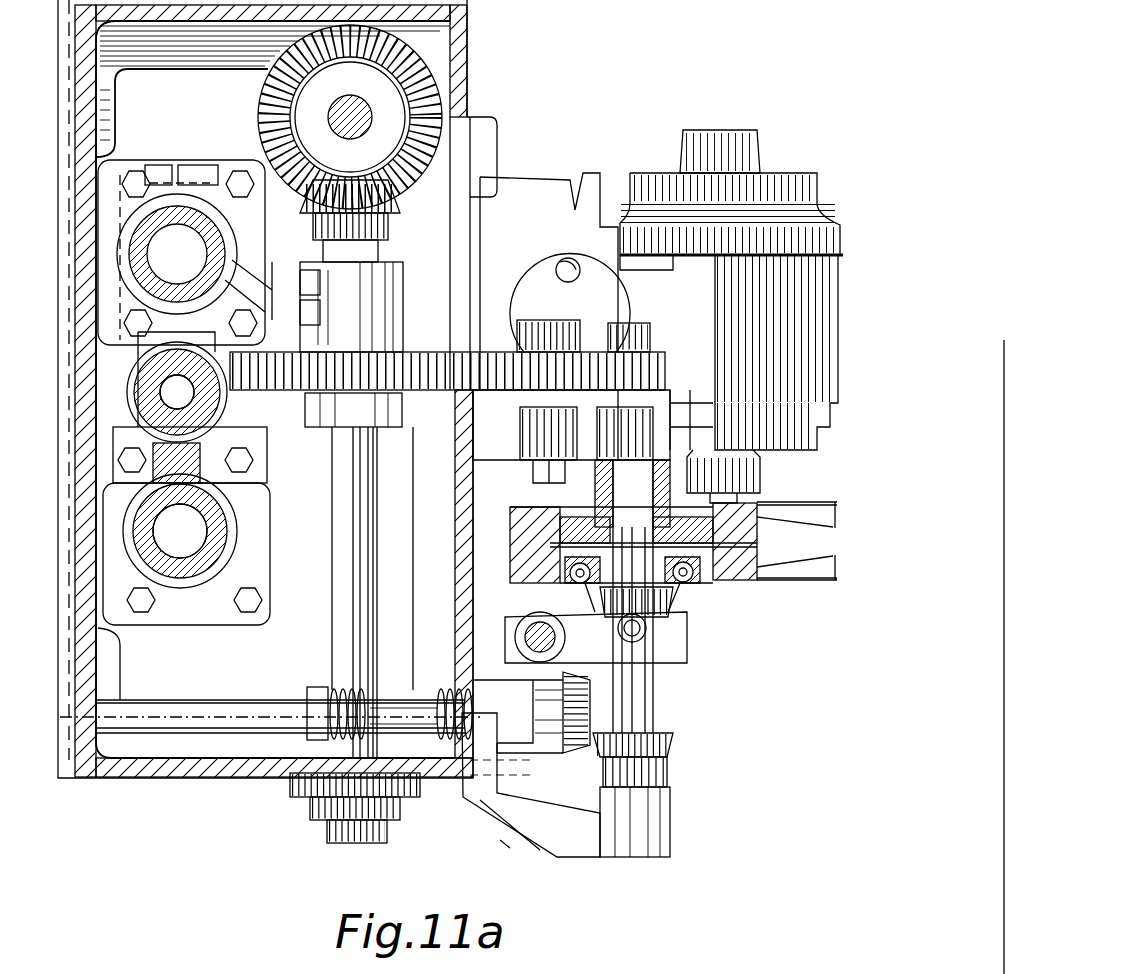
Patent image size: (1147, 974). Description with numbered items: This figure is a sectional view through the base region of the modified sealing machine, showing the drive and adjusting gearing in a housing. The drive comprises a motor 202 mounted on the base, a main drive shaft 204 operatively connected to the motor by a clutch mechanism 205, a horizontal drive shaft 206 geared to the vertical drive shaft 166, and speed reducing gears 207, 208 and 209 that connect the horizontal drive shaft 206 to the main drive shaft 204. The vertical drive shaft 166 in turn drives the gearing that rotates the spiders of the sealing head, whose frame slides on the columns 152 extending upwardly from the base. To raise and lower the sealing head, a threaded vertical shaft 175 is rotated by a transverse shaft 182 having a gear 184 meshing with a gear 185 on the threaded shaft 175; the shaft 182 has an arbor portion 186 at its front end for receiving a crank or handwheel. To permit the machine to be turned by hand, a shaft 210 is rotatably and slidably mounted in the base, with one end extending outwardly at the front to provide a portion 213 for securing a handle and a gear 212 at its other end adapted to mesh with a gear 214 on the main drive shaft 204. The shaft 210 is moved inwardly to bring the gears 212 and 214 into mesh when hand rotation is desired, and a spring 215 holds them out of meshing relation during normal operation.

The columns 152 is at (217, 242).
The vertical drive shaft 166 is at (377, 90).
The threaded vertical shaft 175 is at (213, 398).
The shaft 182 is at (147, 487).
The gear 184 is at (200, 468).
The gear 185 is at (217, 405).
The arbor portion 186 is at (147, 530).
The motor 202 is at (813, 152).
The main drive shaft 204 is at (640, 698).
The clutch mechanism 205 is at (733, 573).
The horizontal drive shaft 206 is at (343, 657).
The speed reducing gear 207 is at (432, 368).
The speed reducing gear 208 is at (560, 352).
The speed reducing gear 209 is at (648, 365).
The shaft 210 is at (207, 710).
The gear 212 is at (580, 750).
The portion 213 is at (73, 763).
The gear 214 is at (673, 752).
The spring 215 is at (423, 693).